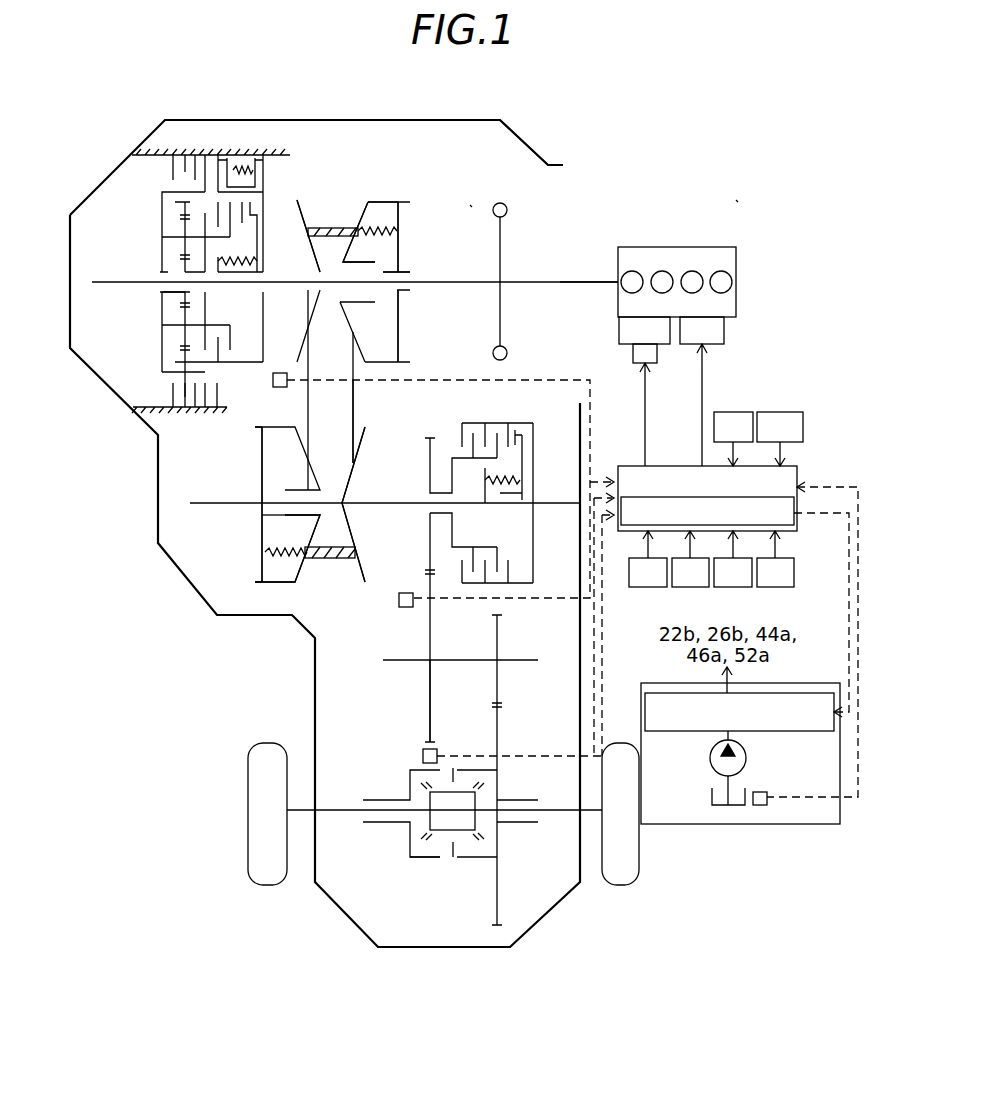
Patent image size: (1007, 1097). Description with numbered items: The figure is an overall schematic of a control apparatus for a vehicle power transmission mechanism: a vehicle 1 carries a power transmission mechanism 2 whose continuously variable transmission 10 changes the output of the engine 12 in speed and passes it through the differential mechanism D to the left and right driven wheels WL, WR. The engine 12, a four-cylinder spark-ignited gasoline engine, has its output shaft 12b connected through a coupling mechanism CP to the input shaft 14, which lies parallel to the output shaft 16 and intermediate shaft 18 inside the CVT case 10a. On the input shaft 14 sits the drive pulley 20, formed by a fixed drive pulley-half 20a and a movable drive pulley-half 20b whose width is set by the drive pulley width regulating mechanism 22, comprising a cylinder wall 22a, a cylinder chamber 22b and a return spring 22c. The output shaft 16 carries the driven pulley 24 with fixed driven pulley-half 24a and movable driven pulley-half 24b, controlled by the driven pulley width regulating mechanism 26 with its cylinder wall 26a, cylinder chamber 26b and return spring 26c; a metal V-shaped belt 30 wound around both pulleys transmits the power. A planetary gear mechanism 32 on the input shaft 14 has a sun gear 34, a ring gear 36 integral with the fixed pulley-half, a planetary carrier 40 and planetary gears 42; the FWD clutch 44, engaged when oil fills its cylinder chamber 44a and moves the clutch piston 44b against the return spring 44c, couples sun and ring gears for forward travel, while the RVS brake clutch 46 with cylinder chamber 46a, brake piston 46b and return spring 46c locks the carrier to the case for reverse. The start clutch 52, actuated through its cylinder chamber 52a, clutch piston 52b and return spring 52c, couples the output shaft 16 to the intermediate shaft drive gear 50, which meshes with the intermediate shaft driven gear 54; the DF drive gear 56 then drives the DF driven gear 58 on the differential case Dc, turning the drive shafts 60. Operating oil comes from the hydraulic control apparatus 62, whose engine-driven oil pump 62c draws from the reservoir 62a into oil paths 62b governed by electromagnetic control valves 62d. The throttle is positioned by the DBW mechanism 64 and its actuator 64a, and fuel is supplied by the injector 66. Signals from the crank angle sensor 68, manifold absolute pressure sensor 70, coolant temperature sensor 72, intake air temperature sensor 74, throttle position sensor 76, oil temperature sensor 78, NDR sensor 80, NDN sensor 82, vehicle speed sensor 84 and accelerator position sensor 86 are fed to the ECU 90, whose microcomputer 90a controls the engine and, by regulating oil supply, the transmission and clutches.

The vehicle 1 is at (741, 190).
The power transmission mechanism 2 is at (559, 130).
The Continuously Variable Transmission (CVT) 10 is at (474, 196).
The CVT case 10a is at (95, 190).
The engine 12 is at (737, 308).
The output shaft (crankshaft) 12b is at (577, 282).
The input shaft 14 is at (432, 285).
The output shaft 16 is at (373, 503).
The intermediate shaft 18 is at (465, 660).
The drive pulley 20 is at (416, 157).
The fixed drive pulley-half 20a is at (318, 200).
The movable drive pulley-half 20b is at (367, 202).
The drive pulley width regulating mechanism 22 is at (421, 188).
The cylinder wall 22a is at (401, 268).
The cylinder chamber 22b is at (397, 234).
The return spring 22c is at (398, 228).
The driven pulley 24 is at (378, 607).
The fixed driven pulley-half 24a is at (354, 576).
The movable driven pulley-half 24b is at (300, 578).
The driven pulley width regulating mechanism 26 is at (233, 603).
The cylinder wall 26a is at (262, 522).
The cylinder chamber 26b is at (268, 535).
The return spring 26c is at (282, 557).
The metal V-shaped belt 30 is at (308, 400).
The planetary gear mechanism 32 is at (148, 192).
The sun gear 34 is at (178, 296).
The ring gear 36 is at (176, 206).
The planetary carrier 40 is at (160, 362).
The planetary gears 42 is at (178, 246).
The FWD clutch 44 is at (276, 197).
The cylinder chamber 44a is at (258, 237).
The clutch piston 44b is at (254, 250).
The return spring 44c is at (228, 268).
The RVS brake clutch 46 is at (214, 136).
The cylinder chamber 46a is at (265, 162).
The brake piston 46b is at (262, 170).
The return spring 46c is at (240, 166).
The intermediate shaft drive gear 50 is at (428, 448).
The start clutch 52 is at (465, 412).
The cylinder chamber 52a is at (528, 438).
The clutch piston 52b is at (523, 450).
The return spring 52c is at (518, 478).
The intermediate shaft driven gear 54 is at (428, 685).
The DF drive gear 56 is at (502, 685).
The DF driven gear 58 is at (502, 728).
The drive shafts 60 is at (300, 813).
The hydraulic control apparatus 62 is at (641, 718).
The reservoir 62a is at (712, 790).
The oil paths 62b is at (737, 740).
The oil pump 62c is at (746, 770).
The electromagnetic control valves 62d is at (697, 732).
The DBW mechanism 64 is at (618, 328).
The actuator (stepper motor) 64a is at (632, 352).
The injector 66 is at (688, 345).
The crank angle sensor 68 is at (725, 412).
The manifold absolute pressure sensor 70 is at (778, 412).
The coolant temperature sensor 72 is at (648, 587).
The intake air temperature sensor 74 is at (690, 587).
The throttle position sensor 76 is at (733, 587).
The oil temperature sensor 78 is at (763, 805).
The NDR sensor 80 is at (273, 380).
The NDN sensor 82 is at (401, 593).
The vehicle speed sensor 84 is at (423, 756).
The accelerator position sensor 86 is at (775, 587).
The ECU (Electronic Control Unit) 90 is at (676, 466).
The microcomputer 90a is at (738, 497).
The differential mechanism D is at (402, 855).
The differential case Dc is at (420, 857).
The left driven wheel WL is at (268, 886).
The right driven wheel WR is at (620, 886).
The coupling mechanism CP is at (500, 338).